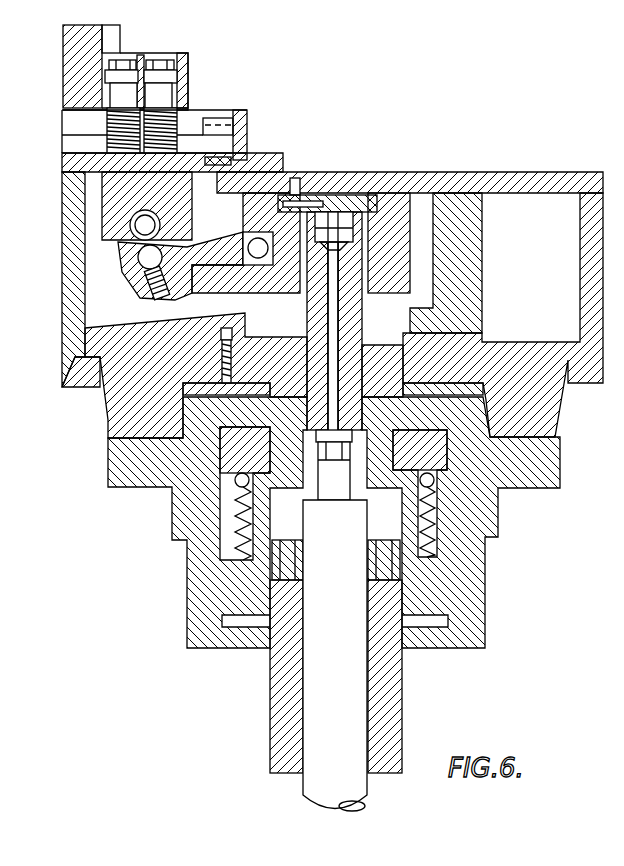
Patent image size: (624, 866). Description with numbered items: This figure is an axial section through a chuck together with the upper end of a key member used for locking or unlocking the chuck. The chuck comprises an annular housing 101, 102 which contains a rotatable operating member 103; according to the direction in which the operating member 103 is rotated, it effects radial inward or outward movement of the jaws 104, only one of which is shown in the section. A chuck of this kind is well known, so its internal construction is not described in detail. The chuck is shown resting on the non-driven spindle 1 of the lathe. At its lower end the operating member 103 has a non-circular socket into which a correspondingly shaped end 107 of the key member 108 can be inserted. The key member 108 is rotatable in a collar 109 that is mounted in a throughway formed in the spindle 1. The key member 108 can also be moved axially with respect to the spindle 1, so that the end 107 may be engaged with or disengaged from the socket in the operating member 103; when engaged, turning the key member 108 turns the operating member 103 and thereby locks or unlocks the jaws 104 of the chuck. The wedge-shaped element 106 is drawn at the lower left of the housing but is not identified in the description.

The non-driven spindle 1 is at (174, 500).
The annular housing 101 is at (66, 270).
The annular housing 102 is at (109, 410).
The operating member 103 is at (366, 290).
The jaws 104 is at (184, 88).
The locking wedge 106 is at (90, 373).
The correspondingly shaped end 107 is at (334, 478).
The key member 108 is at (312, 783).
The collar 109 is at (277, 667).